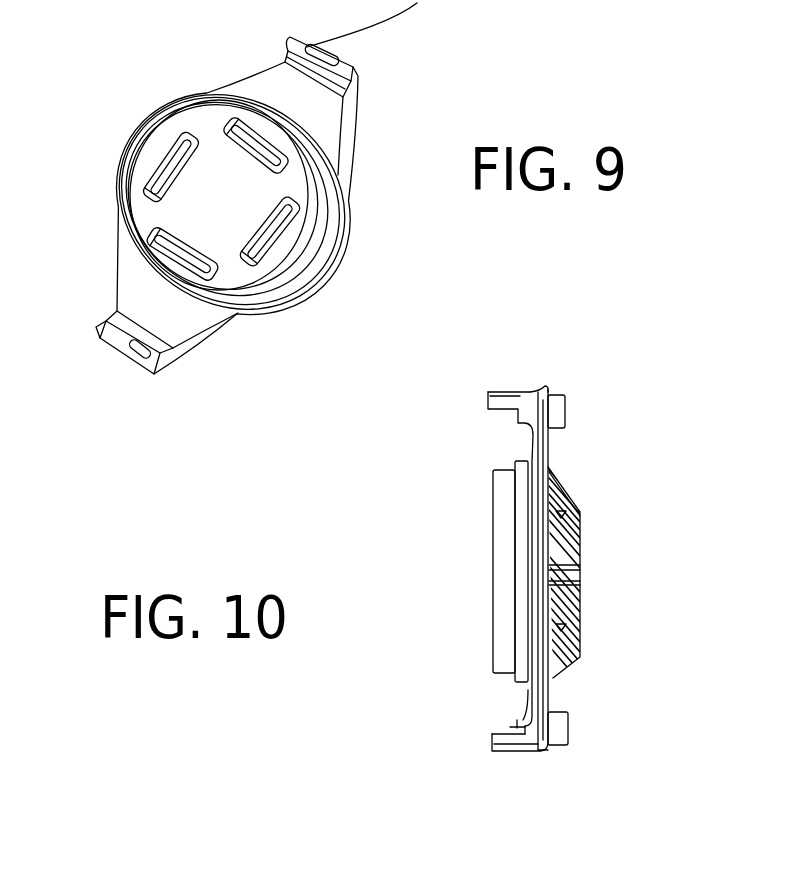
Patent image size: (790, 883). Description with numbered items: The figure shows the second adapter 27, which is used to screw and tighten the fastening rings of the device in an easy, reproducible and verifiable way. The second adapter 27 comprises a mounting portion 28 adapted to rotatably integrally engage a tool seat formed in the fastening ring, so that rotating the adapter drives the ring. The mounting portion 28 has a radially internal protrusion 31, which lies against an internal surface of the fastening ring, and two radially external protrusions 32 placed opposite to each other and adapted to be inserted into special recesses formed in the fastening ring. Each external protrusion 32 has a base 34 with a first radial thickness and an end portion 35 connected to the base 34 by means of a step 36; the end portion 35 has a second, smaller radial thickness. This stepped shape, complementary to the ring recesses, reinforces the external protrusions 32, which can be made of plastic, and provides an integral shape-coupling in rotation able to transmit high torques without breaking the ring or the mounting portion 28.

In FIG. 9, the second adapter 27 is at (136, 124).
In FIG. 10, the second adapter 27 is at (598, 484).
In FIG. 10, the mounting portion 28 is at (458, 760).
In FIG. 9, the radially internal protrusion 31 is at (158, 282).
In FIG. 10, the radially internal protrusion 31 is at (493, 490).
In FIG. 9, the radially external protrusions 32 is at (106, 327).
In FIG. 10, the radially external protrusions 32 is at (502, 376).
In FIG. 10, the base 34 is at (523, 720).
In FIG. 10, the end portion 35 is at (510, 727).
In FIG. 10, the step 36 is at (517, 720).